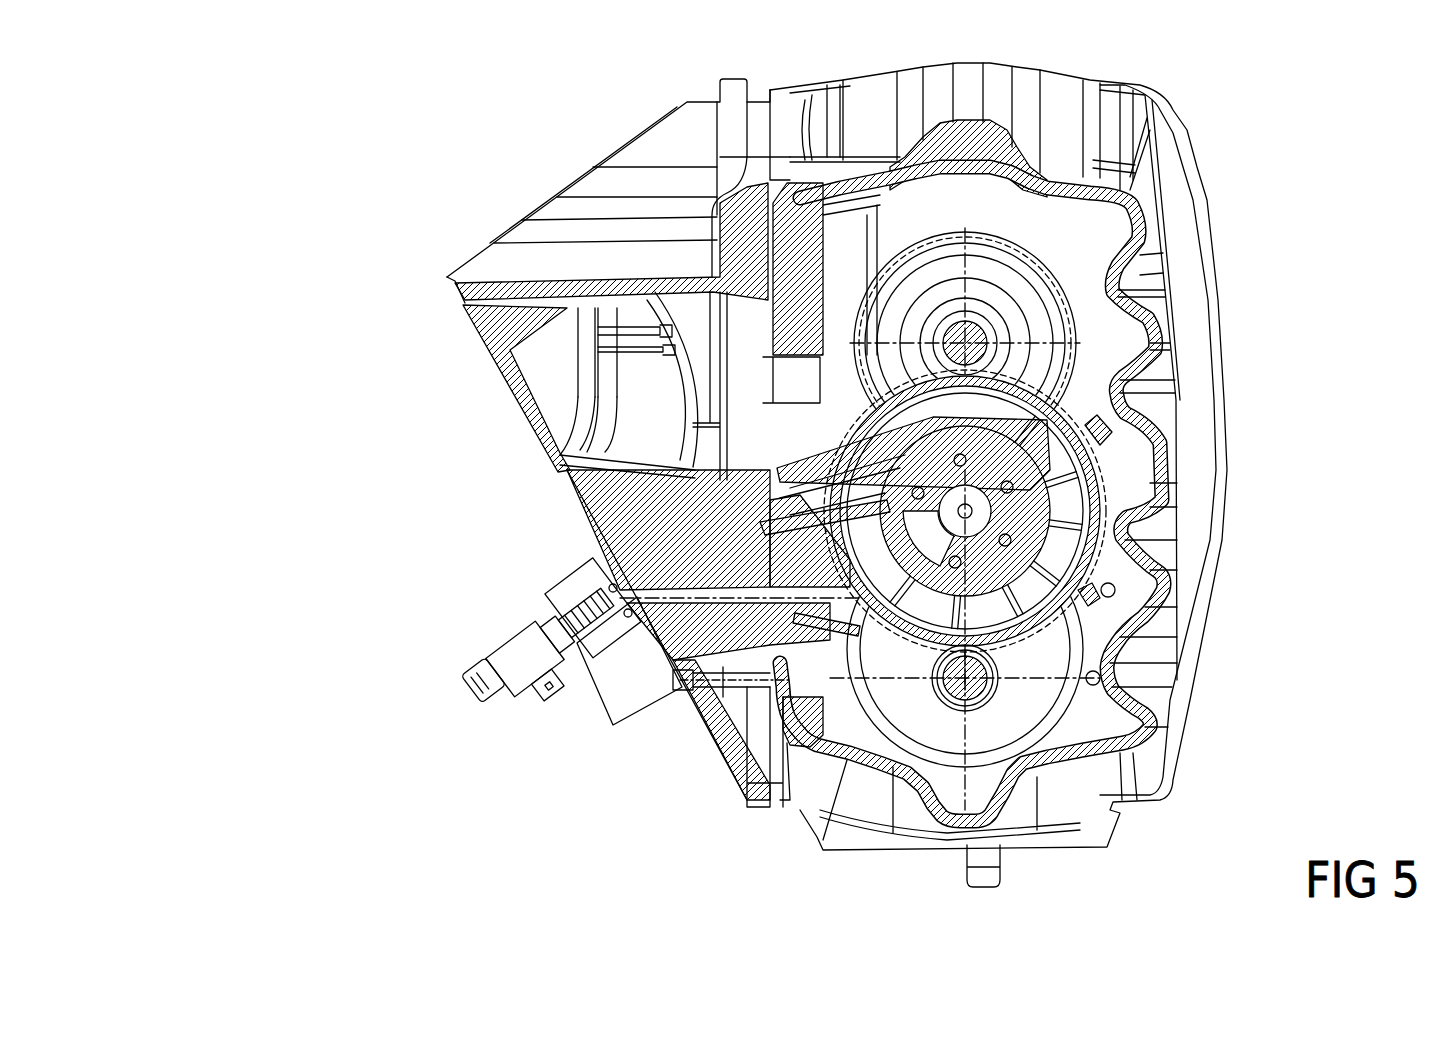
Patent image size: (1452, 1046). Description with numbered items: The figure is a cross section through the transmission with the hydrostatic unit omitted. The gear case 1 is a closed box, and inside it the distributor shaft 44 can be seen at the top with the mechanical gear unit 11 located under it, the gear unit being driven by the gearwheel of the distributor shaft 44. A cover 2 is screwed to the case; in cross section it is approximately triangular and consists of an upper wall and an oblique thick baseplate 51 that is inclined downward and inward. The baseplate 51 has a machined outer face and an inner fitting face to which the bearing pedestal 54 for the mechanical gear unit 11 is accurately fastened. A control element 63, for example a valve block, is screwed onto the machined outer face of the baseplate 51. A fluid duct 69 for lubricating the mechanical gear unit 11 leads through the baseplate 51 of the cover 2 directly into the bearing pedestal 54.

The gear case 1 is at (1252, 187).
The cover 2 is at (522, 156).
The bearing pedestal 54 is at (700, 468).
The control element 63 is at (597, 565).
The fluid duct 69 is at (607, 586).
The baseplate 51 is at (547, 620).
The distributor shaft 44 is at (975, 339).
The mechanical gear unit 11 is at (1040, 490).